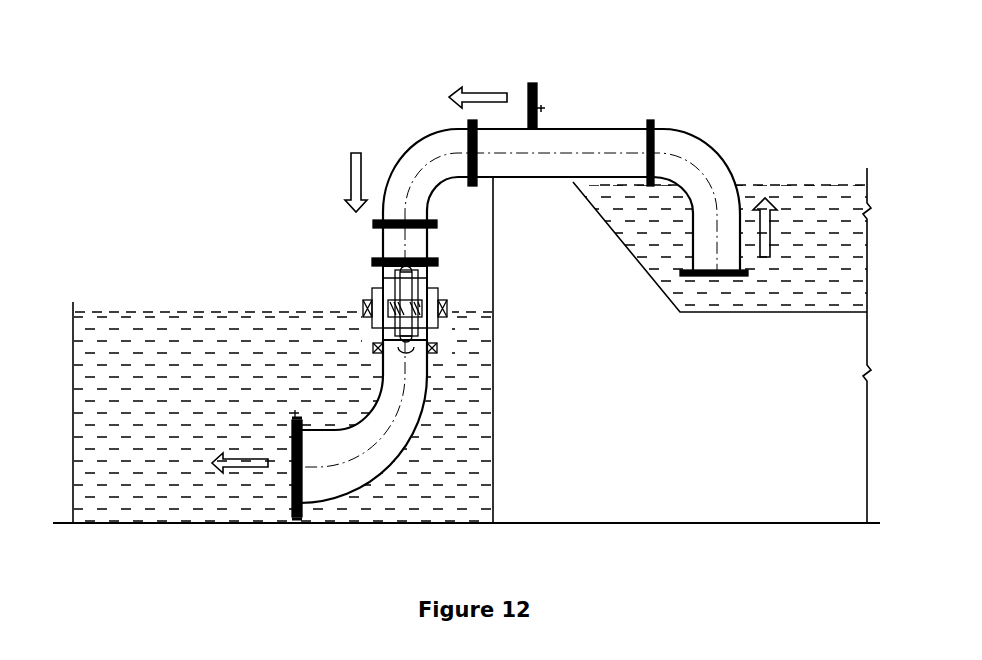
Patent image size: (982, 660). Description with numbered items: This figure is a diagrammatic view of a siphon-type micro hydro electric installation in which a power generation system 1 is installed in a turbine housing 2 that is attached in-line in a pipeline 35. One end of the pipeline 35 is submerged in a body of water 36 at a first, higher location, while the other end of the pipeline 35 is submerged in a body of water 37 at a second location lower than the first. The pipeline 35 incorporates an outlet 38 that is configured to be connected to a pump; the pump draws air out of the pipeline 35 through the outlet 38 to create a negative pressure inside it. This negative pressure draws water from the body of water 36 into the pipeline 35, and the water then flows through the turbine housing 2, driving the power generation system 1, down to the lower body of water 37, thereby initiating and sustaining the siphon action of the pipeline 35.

The power generation system 1 is at (299, 247).
The turbine housing 2 is at (377, 282).
The pipeline 35 is at (402, 155).
The body of water 36 is at (782, 198).
The body of water 37 is at (127, 315).
The outlet 38 is at (538, 93).